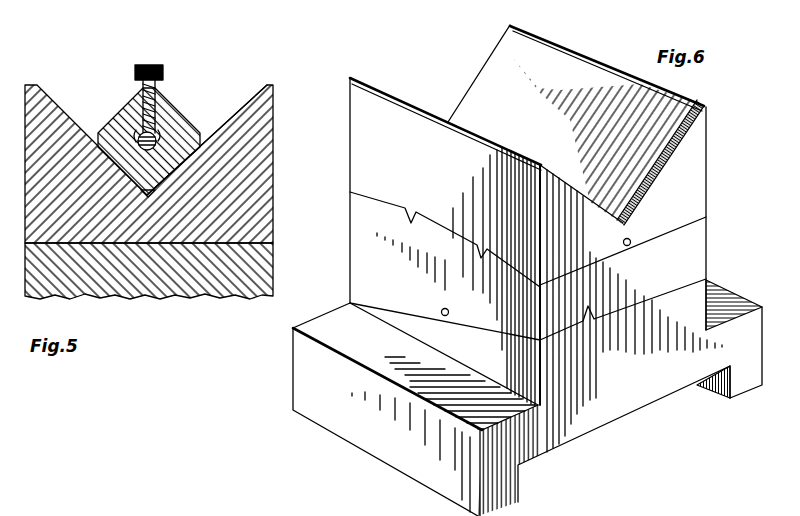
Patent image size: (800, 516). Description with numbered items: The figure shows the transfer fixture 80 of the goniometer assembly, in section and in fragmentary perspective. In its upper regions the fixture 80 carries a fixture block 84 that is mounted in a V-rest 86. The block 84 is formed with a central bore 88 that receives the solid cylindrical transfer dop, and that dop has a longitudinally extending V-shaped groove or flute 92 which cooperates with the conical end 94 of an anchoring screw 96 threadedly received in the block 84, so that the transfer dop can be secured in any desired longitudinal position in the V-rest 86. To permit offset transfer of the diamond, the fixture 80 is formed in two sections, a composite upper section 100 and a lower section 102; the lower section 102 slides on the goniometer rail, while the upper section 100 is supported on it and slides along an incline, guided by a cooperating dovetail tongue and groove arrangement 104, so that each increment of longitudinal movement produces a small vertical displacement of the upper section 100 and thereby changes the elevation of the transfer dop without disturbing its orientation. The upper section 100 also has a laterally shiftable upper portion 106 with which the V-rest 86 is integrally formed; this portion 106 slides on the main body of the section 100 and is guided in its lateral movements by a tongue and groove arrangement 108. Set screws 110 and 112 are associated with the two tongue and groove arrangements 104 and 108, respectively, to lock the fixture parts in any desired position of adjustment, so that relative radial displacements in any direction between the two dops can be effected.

In FIG. 6, the third fixture 80 is at (343, 222).
In FIG. 5, the fixture block 84 is at (177, 100).
In FIG. 5, the V-rest 86 is at (247, 100).
In FIG. 6, the V-rest 86 is at (653, 147).
In FIG. 5, the central bore 88 is at (157, 140).
In FIG. 5, the V-shaped groove or flute 92 is at (142, 136).
In FIG. 5, the conical end 94 is at (157, 132).
In FIG. 5, the anchoring screw 96 is at (152, 62).
In FIG. 5, the composite upper section 100 is at (273, 272).
In FIG. 6, the composite upper section 100 is at (374, 309).
In FIG. 6, the lower section 102 is at (530, 384).
In FIG. 6, the dovetail tongue and groove arrangement 104 is at (662, 291).
In FIG. 5, the laterally shiftable upper portion 106 is at (273, 157).
In FIG. 6, the laterally shiftable upper portion 106 is at (372, 146).
In FIG. 6, the tongue and groove arrangement 108 is at (424, 222).
In FIG. 6, the set screw 110 is at (445, 316).
In FIG. 6, the set screw 112 is at (629, 239).